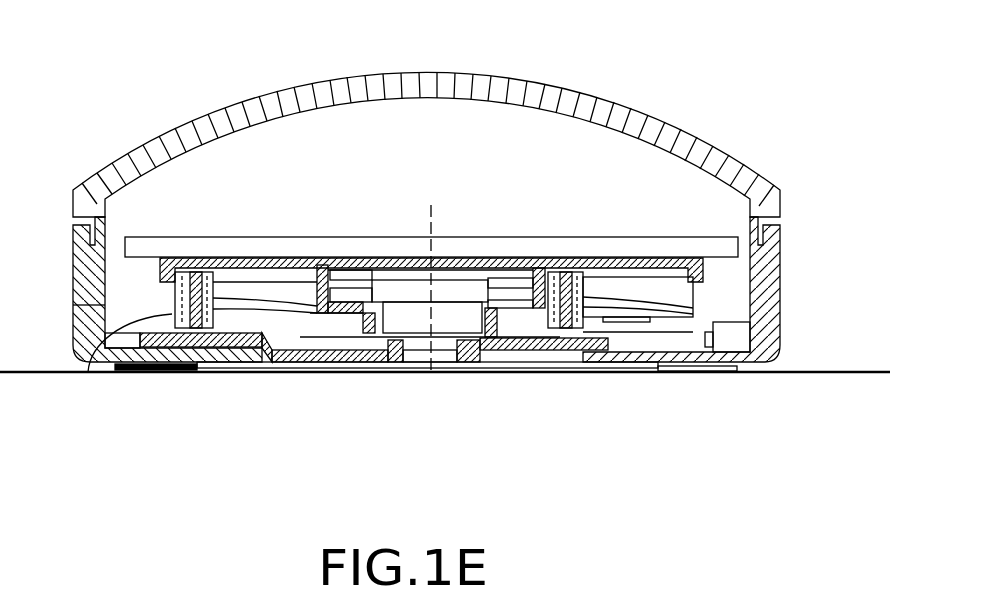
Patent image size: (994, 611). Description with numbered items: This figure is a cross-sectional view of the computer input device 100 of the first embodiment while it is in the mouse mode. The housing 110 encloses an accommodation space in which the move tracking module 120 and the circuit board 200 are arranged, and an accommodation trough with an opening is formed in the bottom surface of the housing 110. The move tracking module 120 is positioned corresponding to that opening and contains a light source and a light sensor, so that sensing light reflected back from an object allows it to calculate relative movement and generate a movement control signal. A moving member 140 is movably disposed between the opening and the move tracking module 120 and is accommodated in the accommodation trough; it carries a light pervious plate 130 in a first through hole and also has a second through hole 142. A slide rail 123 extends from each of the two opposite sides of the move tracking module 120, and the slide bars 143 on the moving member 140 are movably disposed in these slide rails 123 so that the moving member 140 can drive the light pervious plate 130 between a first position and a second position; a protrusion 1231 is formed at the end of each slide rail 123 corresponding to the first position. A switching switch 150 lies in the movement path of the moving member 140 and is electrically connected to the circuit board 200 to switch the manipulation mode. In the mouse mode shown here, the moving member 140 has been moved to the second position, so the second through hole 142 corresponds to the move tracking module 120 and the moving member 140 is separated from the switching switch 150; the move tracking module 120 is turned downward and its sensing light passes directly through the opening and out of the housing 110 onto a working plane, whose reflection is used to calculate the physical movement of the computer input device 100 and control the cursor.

The computer input device 100 is at (114, 50).
The housing 110 is at (637, 125).
The circuit board 200 is at (177, 245).
The slide rail 123 is at (240, 267).
The protrusion 1231 is at (267, 282).
The slide bar 143 is at (88, 372).
The moving member 140 is at (180, 347).
The light pervious plate 130 is at (305, 352).
The second through hole 142 is at (440, 352).
The move tracking module 120 is at (347, 315).
The switching switch 150 is at (727, 340).